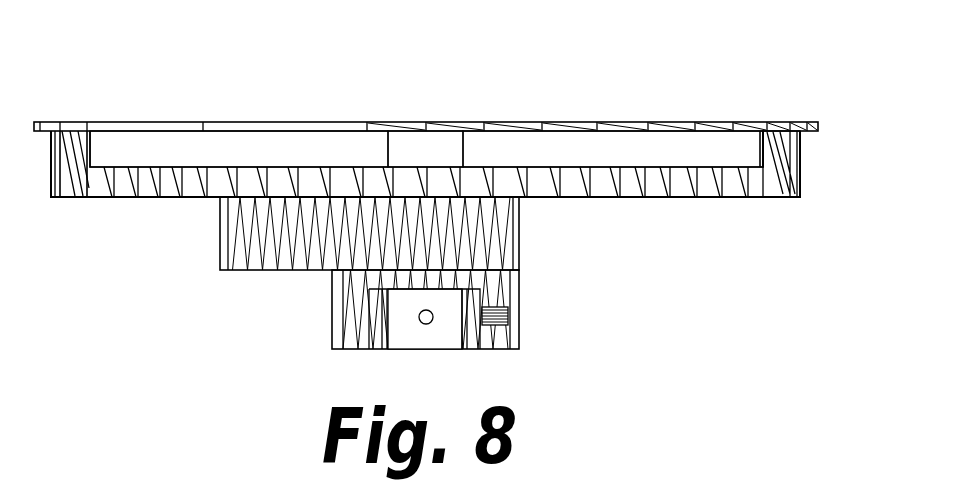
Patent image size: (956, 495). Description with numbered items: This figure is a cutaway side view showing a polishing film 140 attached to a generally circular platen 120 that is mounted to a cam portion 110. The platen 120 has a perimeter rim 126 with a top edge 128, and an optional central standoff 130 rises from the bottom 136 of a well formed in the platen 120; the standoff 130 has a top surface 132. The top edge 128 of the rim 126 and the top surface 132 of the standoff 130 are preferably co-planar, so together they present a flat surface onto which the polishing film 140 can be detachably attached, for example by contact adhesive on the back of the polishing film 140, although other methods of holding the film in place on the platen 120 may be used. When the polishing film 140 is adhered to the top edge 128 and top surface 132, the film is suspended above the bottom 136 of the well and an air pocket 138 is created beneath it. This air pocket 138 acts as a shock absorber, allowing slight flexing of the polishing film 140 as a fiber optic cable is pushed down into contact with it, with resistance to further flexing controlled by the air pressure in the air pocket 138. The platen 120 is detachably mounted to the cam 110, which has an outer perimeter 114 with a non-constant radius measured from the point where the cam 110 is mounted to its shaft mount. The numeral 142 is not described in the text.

The cam portion 110 is at (528, 232).
The outer perimeter 114 is at (220, 242).
The platen 120 is at (747, 223).
The perimeter rim 126 is at (793, 167).
The top edge 128 is at (763, 149).
The central standoff 130 is at (388, 150).
The top surface 132 is at (426, 131).
The bottom 136 is at (623, 165).
The air pocket 138 is at (547, 155).
The polishing film 140 is at (677, 131).
The lower block 142 is at (332, 323).